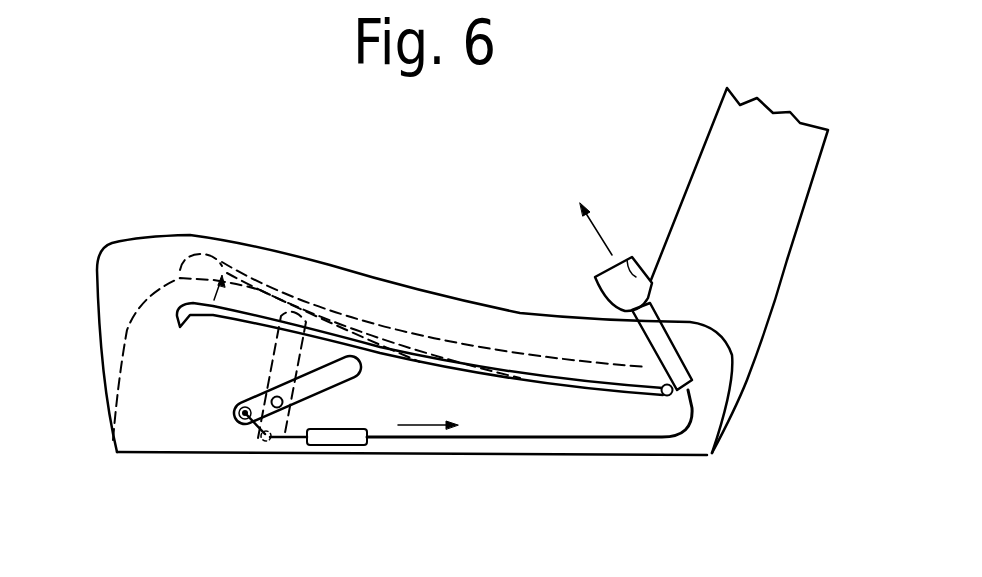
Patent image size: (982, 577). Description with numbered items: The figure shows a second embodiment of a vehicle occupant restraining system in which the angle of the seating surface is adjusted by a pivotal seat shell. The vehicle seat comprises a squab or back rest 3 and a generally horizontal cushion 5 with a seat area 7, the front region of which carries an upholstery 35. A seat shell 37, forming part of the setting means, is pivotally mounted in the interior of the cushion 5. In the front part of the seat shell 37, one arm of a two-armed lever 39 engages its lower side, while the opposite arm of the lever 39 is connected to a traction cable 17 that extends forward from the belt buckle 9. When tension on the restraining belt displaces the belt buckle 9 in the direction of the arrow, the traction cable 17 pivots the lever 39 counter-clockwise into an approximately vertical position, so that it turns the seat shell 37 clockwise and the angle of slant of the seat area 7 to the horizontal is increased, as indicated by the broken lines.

The squab or back rest 3 is at (773, 215).
The cushion 5 is at (488, 410).
The seat area 7 is at (521, 306).
The belt buckle 9 is at (632, 253).
The traction cable 17 is at (545, 438).
The upholstery 35 is at (158, 257).
The seat shell 37 is at (423, 367).
The two-armed lever 39 is at (257, 400).